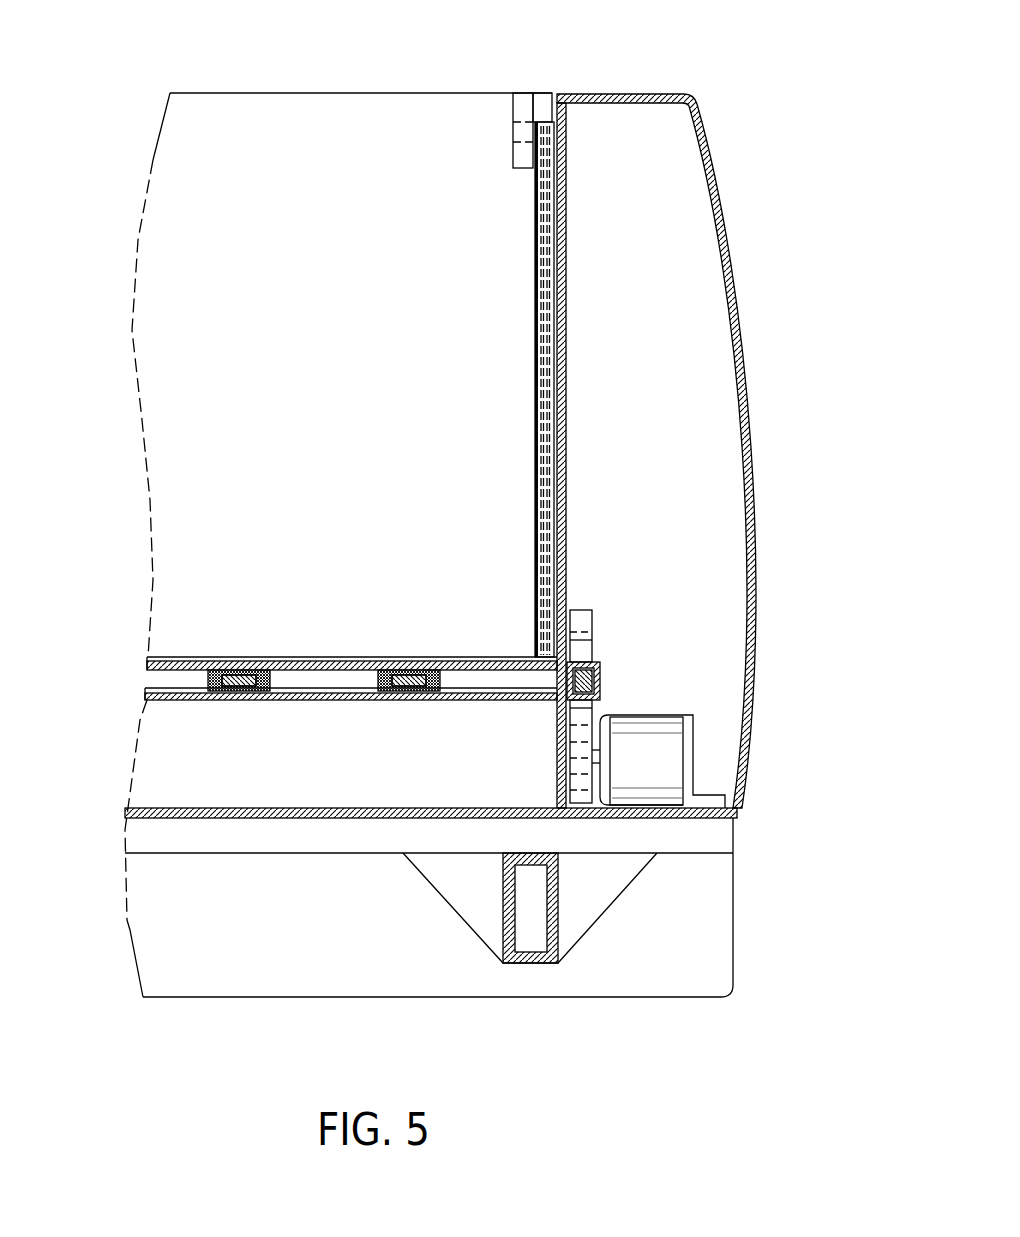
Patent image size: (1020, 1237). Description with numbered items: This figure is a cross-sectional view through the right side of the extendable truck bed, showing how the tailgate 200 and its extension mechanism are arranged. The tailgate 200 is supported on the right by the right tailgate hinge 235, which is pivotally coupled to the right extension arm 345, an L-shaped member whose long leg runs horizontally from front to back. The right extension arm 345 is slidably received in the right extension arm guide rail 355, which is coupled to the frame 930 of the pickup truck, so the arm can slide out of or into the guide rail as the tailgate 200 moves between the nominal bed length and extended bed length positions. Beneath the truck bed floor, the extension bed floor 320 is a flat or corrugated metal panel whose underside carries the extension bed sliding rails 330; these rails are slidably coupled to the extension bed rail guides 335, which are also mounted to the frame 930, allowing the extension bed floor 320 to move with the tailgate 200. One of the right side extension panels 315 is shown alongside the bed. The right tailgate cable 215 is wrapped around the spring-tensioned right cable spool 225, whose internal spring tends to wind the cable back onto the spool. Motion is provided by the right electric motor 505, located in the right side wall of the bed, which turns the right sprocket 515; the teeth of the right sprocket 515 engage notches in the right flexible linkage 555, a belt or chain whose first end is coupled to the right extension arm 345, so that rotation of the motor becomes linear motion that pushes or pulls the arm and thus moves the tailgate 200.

The tailgate 200 is at (337, 133).
The right tailgate cable 215 is at (535, 115).
The right cable spool 225 is at (520, 168).
The right side extension panel 315 is at (548, 310).
The extension bed floor 320 is at (305, 683).
The extension bed sliding rail 330 is at (405, 663).
The extension bed rail guide 335 is at (270, 683).
The right tailgate hinge 235 is at (592, 624).
The right extension arm 345 is at (583, 653).
The right extension arm guide rail 355 is at (600, 680).
The right flexible linkage 555 is at (583, 707).
The right electric motor 505 is at (663, 773).
The right sprocket 515 is at (582, 778).
The frame 930 is at (220, 812).